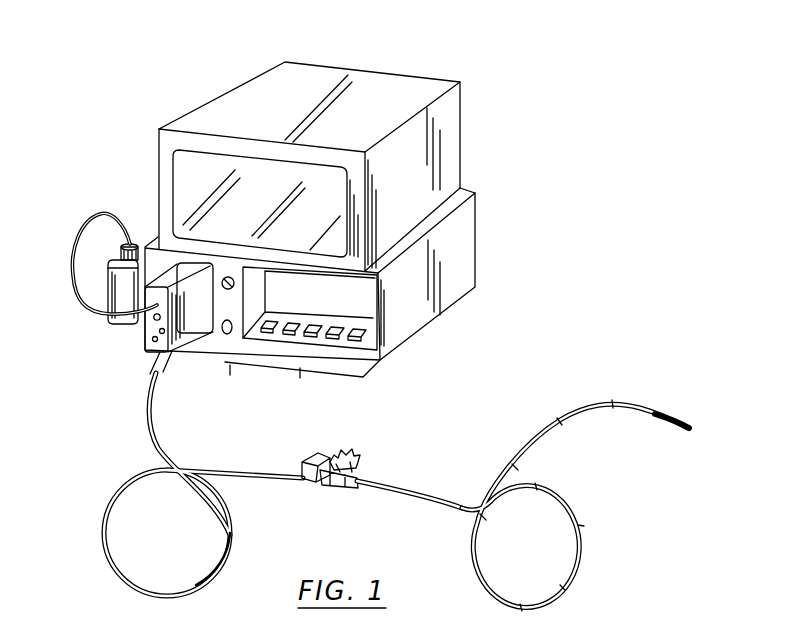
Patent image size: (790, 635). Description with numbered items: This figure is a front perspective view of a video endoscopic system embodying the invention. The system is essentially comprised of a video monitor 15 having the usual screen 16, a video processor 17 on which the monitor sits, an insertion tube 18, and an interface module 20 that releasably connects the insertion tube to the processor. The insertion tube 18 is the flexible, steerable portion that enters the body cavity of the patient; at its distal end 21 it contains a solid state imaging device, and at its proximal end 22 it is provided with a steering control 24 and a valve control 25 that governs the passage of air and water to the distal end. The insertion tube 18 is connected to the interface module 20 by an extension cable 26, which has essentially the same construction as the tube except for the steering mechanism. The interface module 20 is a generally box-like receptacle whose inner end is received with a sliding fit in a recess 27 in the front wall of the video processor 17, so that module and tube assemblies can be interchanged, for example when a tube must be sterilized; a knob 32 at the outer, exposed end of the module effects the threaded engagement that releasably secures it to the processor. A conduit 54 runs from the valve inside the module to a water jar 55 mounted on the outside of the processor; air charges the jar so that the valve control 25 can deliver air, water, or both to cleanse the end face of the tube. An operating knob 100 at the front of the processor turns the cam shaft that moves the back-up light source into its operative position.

The video monitor 15 is at (377, 80).
The screen 16 is at (187, 180).
The video processor 17 is at (450, 285).
The insertion tube 18 is at (543, 436).
The interface module 20 is at (197, 320).
The distal end 21 is at (673, 413).
The proximal end 22 is at (367, 480).
The steering control 24 is at (347, 453).
The valve control 25 is at (310, 455).
The extension cable 26 is at (152, 421).
The recess 27 is at (232, 277).
The knob 32 is at (155, 319).
The conduit 54 is at (75, 256).
The water jar 55 is at (123, 297).
The operating knob 100 is at (234, 289).